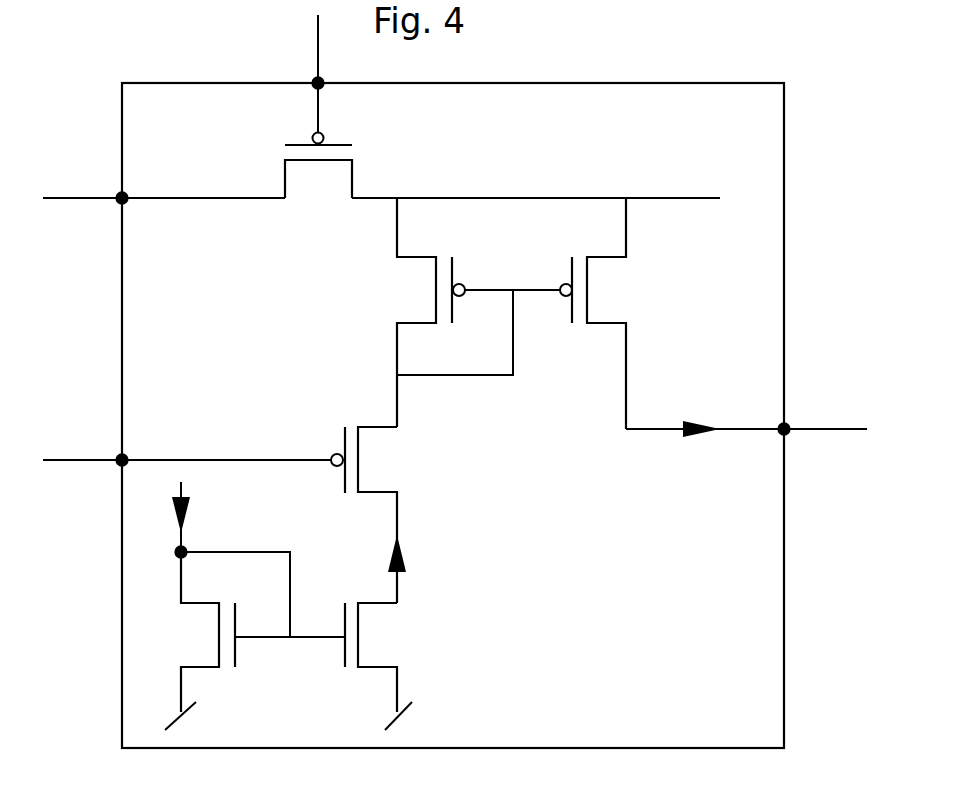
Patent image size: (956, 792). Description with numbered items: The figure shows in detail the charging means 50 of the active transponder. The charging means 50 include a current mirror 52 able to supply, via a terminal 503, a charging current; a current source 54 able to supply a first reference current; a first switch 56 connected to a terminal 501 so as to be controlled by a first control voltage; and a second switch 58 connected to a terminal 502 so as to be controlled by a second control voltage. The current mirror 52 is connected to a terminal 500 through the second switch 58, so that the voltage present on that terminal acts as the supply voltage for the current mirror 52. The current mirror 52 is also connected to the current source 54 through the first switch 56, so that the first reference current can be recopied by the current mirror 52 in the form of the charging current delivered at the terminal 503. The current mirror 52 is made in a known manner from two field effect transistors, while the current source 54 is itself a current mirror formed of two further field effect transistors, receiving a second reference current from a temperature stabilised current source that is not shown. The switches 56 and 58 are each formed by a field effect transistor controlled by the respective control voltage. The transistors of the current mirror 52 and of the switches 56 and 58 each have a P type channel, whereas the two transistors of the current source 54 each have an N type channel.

The charging means 50 is at (94, 340).
The current mirror 52 is at (568, 393).
The current source 54 is at (299, 682).
The first switch 56 is at (314, 404).
The second switch 58 is at (395, 149).
The terminal 500 is at (381, 202).
The terminal 501 is at (186, 460).
The terminal 502 is at (294, 72).
The terminal 503 is at (746, 426).